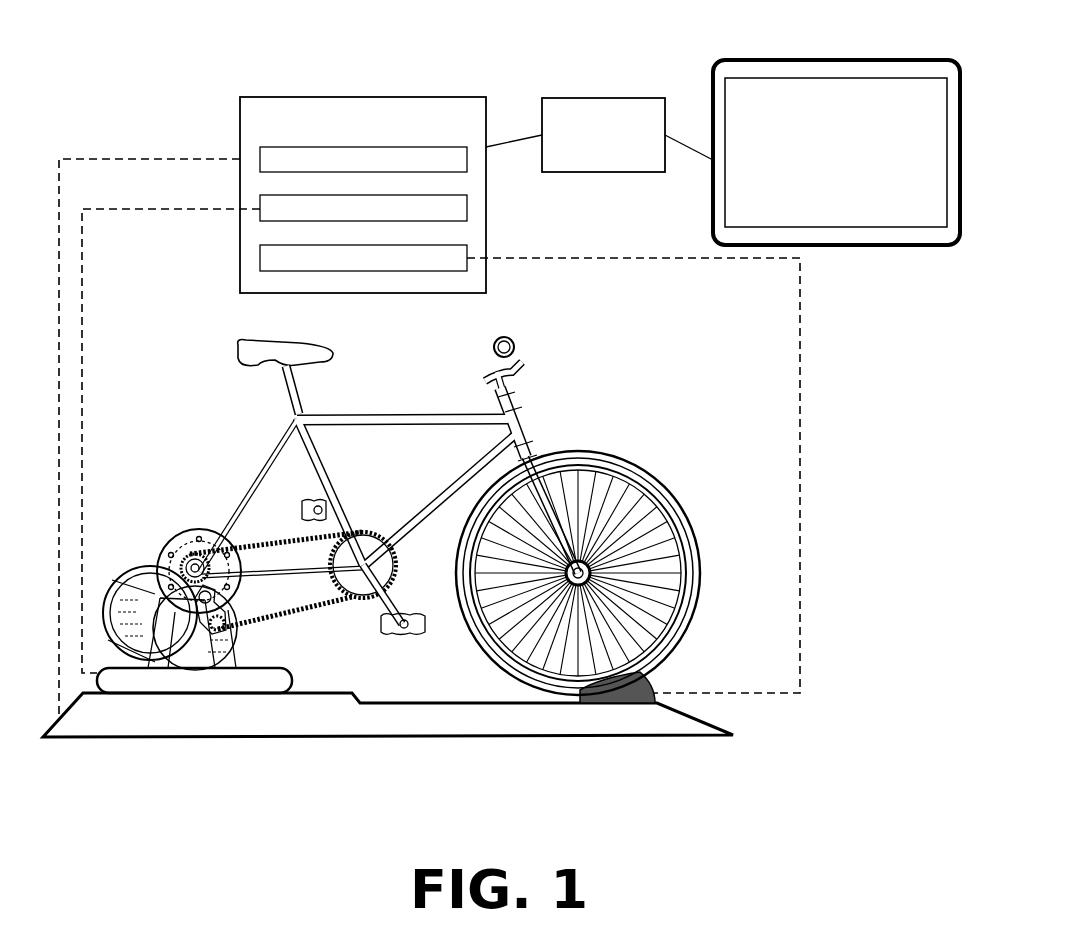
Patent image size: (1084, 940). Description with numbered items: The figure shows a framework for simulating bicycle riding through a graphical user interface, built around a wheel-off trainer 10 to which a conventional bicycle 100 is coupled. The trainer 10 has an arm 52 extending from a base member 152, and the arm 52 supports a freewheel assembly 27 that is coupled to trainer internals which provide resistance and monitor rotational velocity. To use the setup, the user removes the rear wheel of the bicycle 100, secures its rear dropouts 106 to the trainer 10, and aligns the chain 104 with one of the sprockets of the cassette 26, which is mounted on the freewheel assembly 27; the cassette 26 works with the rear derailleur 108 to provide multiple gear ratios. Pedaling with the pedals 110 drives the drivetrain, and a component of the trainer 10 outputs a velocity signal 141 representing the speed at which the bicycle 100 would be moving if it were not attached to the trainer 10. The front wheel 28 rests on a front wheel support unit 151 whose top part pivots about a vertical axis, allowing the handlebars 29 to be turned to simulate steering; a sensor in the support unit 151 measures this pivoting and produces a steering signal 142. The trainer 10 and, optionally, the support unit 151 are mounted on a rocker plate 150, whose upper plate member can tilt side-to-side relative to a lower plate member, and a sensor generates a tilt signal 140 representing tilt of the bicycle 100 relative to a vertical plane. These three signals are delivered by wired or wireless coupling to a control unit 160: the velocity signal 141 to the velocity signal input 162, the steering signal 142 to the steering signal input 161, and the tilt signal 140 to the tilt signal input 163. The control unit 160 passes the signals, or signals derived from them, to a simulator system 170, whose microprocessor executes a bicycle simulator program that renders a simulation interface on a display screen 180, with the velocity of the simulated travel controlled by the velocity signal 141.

The trainer 10 is at (140, 498).
The cassette 26 is at (190, 550).
The freewheel assembly 27 is at (172, 535).
The front wheel 28 is at (640, 475).
The handlebars 29 is at (511, 339).
The arm 52 is at (142, 572).
The bicycle 100 is at (557, 388).
The chain 104 is at (279, 536).
The rear dropouts 106 is at (225, 572).
The rear derailleur 108 is at (224, 612).
The pedals 110 is at (309, 498).
The tilt signal 140 is at (143, 158).
The velocity signal 141 is at (85, 402).
The steering signal 142 is at (800, 461).
The rocker plate 150 is at (385, 712).
The front wheel support unit 151 is at (637, 703).
The base member 152 is at (162, 672).
The control unit 160 is at (357, 96).
The steering signal input 161 is at (267, 245).
The velocity signal input 162 is at (263, 195).
The tilt signal input 163 is at (263, 147).
The simulator system 170 is at (604, 97).
The display screen 180 is at (838, 58).